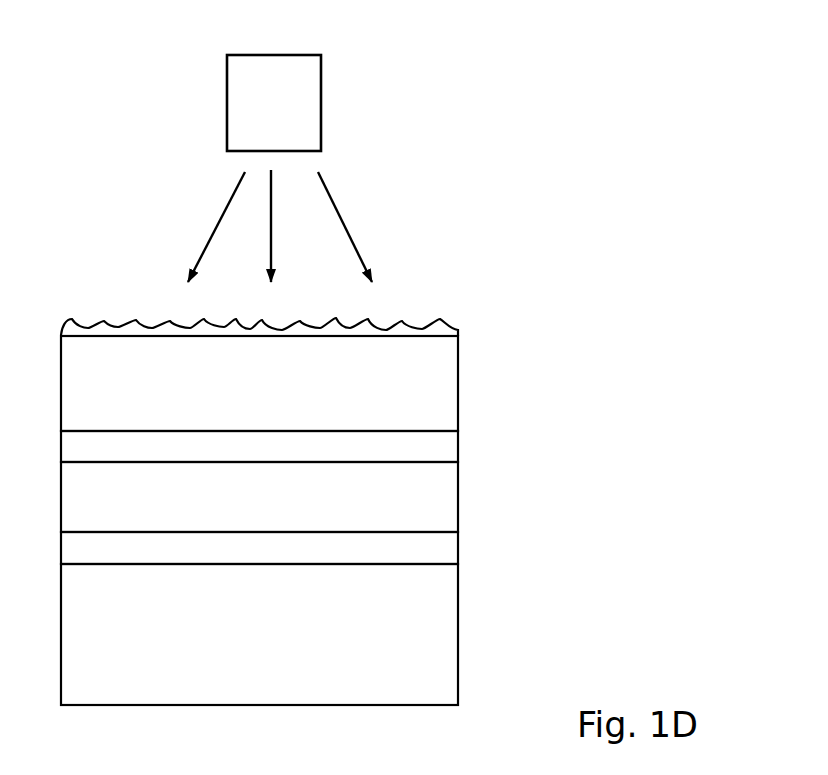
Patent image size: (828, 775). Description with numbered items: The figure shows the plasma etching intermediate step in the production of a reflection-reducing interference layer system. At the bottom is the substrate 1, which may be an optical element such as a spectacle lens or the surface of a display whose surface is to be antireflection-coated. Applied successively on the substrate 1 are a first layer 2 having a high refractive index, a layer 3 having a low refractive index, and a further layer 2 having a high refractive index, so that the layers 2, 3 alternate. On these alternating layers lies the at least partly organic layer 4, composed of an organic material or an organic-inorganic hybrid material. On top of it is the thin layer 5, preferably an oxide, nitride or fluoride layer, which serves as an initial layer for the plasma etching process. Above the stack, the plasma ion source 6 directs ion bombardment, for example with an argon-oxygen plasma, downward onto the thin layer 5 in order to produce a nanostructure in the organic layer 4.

The substrate 1 is at (443, 644).
The layer having a high refractive index 2 is at (445, 450).
The layer having a low refractive index 3 is at (444, 502).
The at least partly organic layer 4 is at (445, 394).
The thin layer 5 is at (368, 327).
The plasma ion source 6 is at (305, 108).